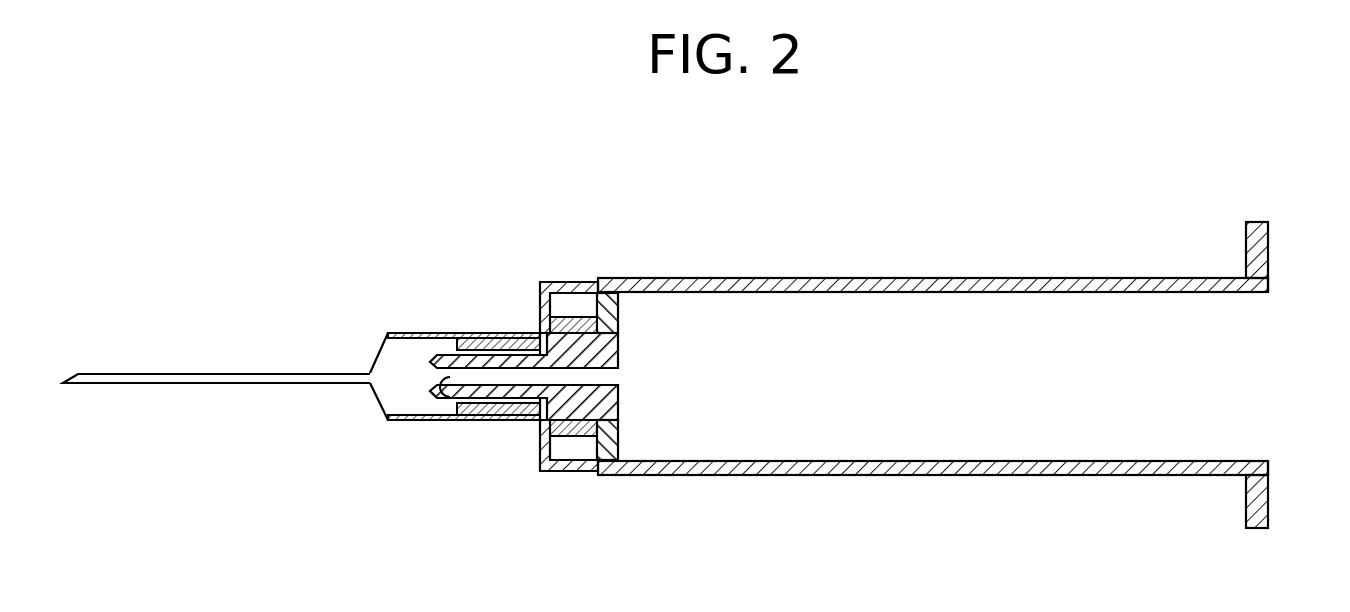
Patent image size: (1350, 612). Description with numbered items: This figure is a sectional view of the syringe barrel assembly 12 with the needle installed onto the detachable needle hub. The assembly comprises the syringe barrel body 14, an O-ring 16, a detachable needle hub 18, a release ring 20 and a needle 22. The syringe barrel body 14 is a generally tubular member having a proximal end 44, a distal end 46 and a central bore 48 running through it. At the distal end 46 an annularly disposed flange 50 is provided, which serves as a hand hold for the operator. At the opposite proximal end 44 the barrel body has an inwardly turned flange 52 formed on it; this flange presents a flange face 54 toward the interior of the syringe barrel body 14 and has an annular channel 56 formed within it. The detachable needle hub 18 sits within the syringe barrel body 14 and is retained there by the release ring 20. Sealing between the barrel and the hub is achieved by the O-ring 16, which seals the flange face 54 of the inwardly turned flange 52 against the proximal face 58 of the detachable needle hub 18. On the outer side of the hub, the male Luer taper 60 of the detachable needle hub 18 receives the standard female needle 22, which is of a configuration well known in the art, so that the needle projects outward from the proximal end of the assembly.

The syringe barrel assembly 12 is at (807, 222).
The syringe barrel body 14 is at (990, 277).
The O-ring 16 is at (593, 325).
The detachable needle hub 18 is at (618, 333).
The release ring 20 is at (603, 283).
The needle 22 is at (390, 333).
The proximal end 44 is at (538, 283).
The distal end 46 is at (1268, 291).
The central bore 48 is at (988, 395).
The flange 50 is at (1263, 222).
The inwardly turned flange 52 is at (540, 450).
The flange face 54 is at (588, 442).
The annular channel 56 is at (572, 452).
The proximal face 58 is at (550, 432).
The male Luer taper 60 is at (437, 378).